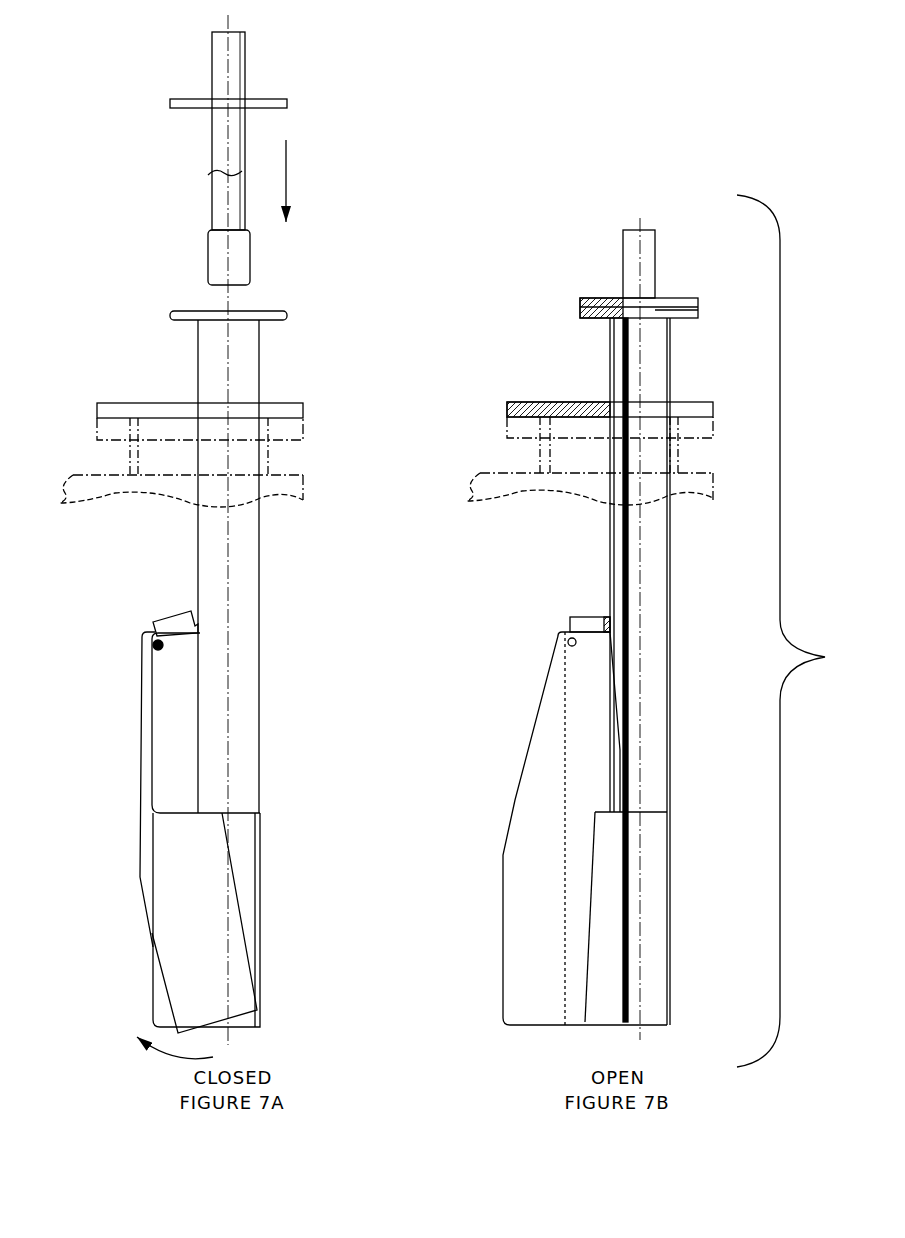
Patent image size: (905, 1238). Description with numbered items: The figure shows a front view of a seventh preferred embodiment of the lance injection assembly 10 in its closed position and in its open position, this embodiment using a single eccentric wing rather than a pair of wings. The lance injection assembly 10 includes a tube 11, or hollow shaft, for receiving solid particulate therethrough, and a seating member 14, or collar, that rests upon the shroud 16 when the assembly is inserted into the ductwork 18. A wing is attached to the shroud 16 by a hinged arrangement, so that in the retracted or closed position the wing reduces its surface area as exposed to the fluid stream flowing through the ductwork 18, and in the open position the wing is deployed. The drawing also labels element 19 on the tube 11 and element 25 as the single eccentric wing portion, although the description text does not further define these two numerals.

In FIG. 7B, the lance injection assembly 10 is at (825, 657).
In FIG. 7A, the tube 11 is at (162, 131).
In FIG. 7B, the tube 11 is at (639, 626).
In FIG. 7A, the seating member 14 is at (290, 68).
In FIG. 7B, the seating member 14 is at (639, 308).
In FIG. 7A, the shroud 16 is at (291, 539).
In FIG. 7B, the shroud 16 is at (557, 671).
In FIG. 7A, the ductwork 18 is at (251, 411).
In FIG. 7B, the ductwork 18 is at (590, 453).
In FIG. 7A, the nut 19 is at (297, 241).
In FIG. 7B, the nut 19 is at (626, 917).
In FIG. 7A, the claw 25 is at (143, 835).
In FIG. 7B, the claw 25 is at (529, 821).